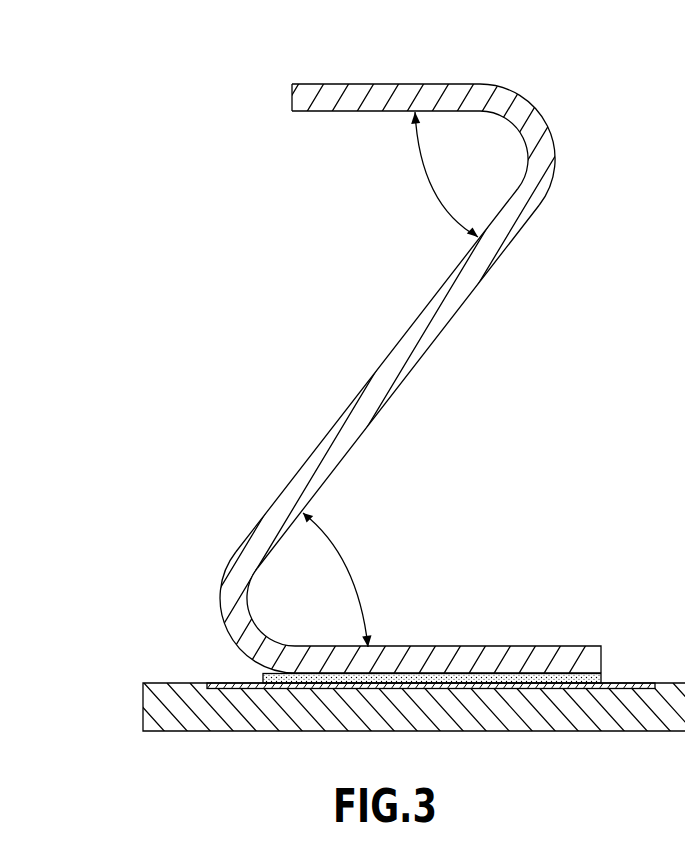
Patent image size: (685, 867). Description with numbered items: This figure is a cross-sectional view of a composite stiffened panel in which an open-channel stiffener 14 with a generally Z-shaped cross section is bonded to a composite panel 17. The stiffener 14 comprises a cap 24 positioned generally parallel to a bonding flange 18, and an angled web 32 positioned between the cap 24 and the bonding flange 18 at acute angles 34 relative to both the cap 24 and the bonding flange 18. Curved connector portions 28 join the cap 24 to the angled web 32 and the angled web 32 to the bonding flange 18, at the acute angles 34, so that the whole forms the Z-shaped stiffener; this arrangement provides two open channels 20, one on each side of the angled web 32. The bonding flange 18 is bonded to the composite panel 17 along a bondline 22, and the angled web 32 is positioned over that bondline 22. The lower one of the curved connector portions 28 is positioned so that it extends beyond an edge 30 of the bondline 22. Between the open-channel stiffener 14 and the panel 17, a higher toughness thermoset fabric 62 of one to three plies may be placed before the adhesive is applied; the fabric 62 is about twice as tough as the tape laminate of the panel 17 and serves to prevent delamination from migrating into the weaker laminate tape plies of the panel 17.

The open-channel stiffener 14 is at (203, 100).
The composite panel 17 is at (627, 718).
The bonding flange 18 is at (433, 647).
The open channels 20 is at (217, 120).
The bondline 22 is at (600, 678).
The cap 24 is at (391, 98).
The curved connector portions 28 is at (553, 137).
The edge of the bondline 30 is at (263, 675).
The angled web 32 is at (363, 407).
The acute angles 34 is at (428, 176).
The higher toughness thermoset fabric 62 is at (530, 689).